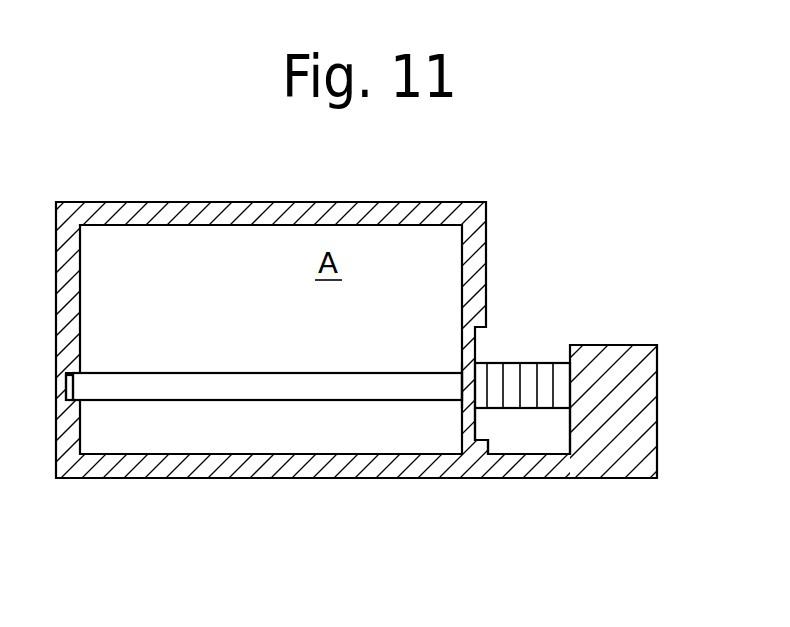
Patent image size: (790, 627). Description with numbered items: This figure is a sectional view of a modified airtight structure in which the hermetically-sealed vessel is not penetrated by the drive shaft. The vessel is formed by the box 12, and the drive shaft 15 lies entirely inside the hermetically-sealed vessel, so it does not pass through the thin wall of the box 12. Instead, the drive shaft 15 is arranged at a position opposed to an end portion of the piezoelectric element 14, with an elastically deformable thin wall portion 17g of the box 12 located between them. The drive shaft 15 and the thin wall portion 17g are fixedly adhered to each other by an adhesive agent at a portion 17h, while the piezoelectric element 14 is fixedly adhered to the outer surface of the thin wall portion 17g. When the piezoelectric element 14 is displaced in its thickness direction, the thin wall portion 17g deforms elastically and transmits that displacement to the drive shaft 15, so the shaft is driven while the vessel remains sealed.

The box 12 is at (478, 283).
The piezoelectric element 14 is at (528, 358).
The drive shaft 15 is at (206, 383).
The portion 17h is at (462, 371).
The thin wall portion 17g is at (471, 423).